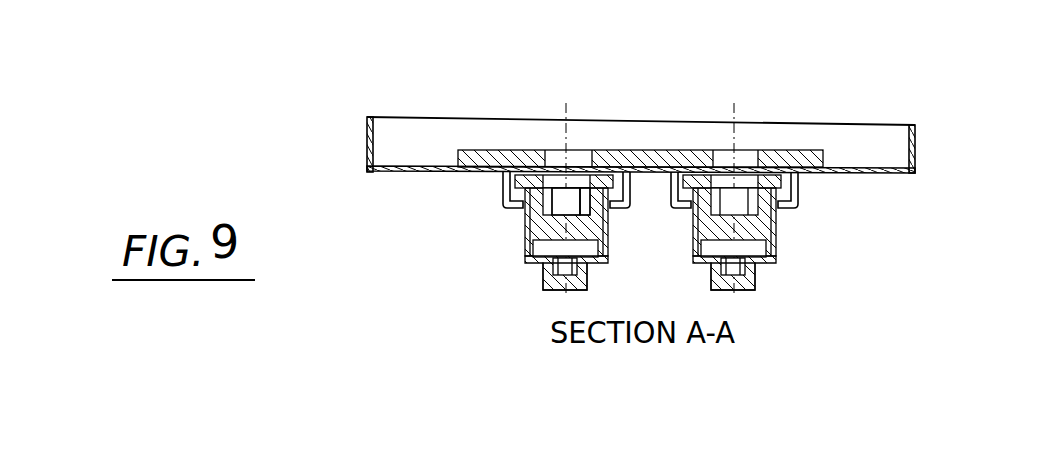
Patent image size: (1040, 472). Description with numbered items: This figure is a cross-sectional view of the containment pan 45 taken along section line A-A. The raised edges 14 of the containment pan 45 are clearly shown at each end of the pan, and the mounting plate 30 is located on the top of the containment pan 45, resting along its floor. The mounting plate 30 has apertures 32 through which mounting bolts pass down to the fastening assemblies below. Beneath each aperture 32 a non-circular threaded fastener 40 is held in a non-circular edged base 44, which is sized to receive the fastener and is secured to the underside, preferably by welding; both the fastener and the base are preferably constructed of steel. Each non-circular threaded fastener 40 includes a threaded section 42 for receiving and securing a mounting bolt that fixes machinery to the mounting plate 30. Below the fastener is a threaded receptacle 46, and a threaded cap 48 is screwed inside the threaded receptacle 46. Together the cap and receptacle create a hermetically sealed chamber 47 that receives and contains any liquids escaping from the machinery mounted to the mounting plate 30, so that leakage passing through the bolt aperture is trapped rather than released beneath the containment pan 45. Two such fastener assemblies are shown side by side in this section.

The raised edges 14 is at (367, 133).
The mounting plate 30 is at (505, 153).
The apertures 32 is at (596, 143).
The non-circular threaded fastener 40 is at (585, 210).
The threaded section 42 is at (595, 215).
The non-circular edged base 44 is at (500, 197).
The containment pan 45 is at (874, 135).
The threaded receptacle 46 is at (523, 227).
The hermetically sealed chamber 47 is at (753, 233).
The threaded cap 48 is at (533, 263).